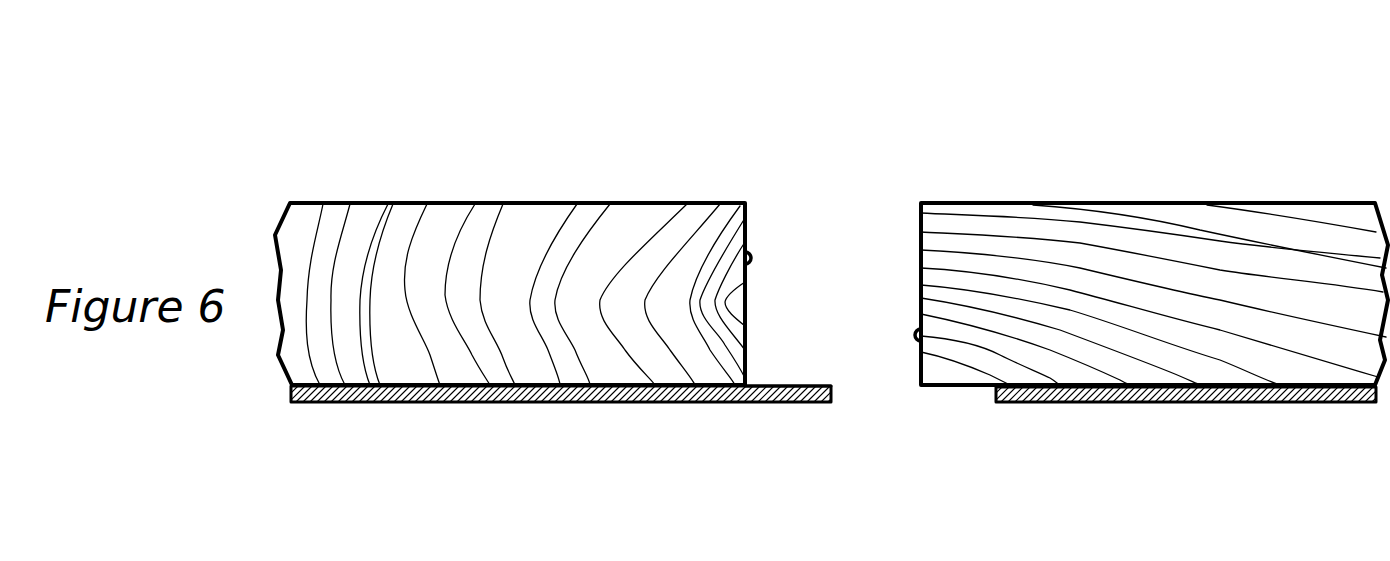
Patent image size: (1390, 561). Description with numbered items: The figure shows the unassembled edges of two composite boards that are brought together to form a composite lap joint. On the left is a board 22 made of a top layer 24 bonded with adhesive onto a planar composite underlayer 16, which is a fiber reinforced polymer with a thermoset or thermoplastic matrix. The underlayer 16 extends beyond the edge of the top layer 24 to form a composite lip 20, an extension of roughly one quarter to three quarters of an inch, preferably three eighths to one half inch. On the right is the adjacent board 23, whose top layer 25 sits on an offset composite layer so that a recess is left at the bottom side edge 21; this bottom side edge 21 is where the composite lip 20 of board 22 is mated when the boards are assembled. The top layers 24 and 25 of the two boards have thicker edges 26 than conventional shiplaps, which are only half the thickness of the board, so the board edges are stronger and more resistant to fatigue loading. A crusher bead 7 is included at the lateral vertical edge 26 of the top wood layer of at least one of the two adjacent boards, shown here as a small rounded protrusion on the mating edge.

The board 22 is at (362, 140).
The top layer 24 is at (447, 272).
The crusher bead 7 is at (768, 194).
The underlayer 16 is at (393, 415).
The composite lip 20 is at (772, 415).
The adjacent board 23 is at (1232, 140).
The top layer 25 is at (1110, 272).
The thicker edge 26 is at (891, 233).
The bottom side edge 21 is at (948, 398).